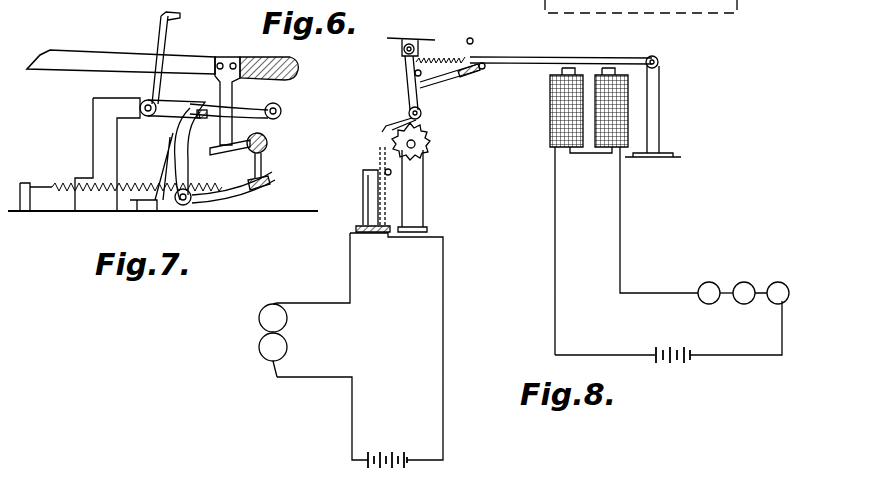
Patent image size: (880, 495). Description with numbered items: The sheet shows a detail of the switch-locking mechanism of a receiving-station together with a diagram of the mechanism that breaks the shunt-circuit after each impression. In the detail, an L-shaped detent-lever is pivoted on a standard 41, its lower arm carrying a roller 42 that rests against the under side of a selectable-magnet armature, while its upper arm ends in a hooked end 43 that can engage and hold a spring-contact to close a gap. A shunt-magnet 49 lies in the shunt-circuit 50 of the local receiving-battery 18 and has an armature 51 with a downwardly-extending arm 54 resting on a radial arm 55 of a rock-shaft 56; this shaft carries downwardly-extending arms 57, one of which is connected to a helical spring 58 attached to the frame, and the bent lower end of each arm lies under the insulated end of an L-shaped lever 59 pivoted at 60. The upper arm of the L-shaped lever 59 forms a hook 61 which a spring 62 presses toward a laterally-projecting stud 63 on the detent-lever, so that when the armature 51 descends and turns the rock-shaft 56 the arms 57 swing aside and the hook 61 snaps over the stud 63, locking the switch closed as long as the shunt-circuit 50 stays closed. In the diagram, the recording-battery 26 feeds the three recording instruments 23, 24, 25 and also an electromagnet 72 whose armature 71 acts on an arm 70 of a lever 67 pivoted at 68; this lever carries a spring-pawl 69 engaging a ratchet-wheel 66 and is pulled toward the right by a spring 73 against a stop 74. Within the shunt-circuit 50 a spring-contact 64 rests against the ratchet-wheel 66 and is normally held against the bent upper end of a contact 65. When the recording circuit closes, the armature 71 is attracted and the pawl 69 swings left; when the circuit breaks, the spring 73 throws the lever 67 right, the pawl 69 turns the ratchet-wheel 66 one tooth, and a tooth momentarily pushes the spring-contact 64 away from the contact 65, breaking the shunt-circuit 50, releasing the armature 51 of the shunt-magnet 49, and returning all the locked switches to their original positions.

In FIG. 8, the local receiving-battery 18 is at (387, 449).
In FIG. 8, the recording instrument 23 is at (637, 251).
In FIG. 8, the recording instrument 24 is at (737, 285).
In FIG. 8, the recording instrument 25 is at (739, 310).
In FIG. 8, the recording-battery 26 is at (622, 343).
In FIG. 7, the standard 41 is at (115, 154).
In FIG. 7, the roller 42 is at (282, 104).
In FIG. 7, the hooked end 43 is at (177, 55).
In FIG. 8, the shunt-magnet 49 is at (287, 340).
In FIG. 8, the shunt-circuit 50 is at (374, 346).
In FIG. 7, the armature 51 is at (121, 62).
In FIG. 7, the downwardly-extending arm 54 is at (256, 101).
In FIG. 7, the radial arm 55 is at (230, 155).
In FIG. 7, the rock-shaft 56 is at (271, 138).
In FIG. 7, the downwardly-extending arm 57 is at (268, 161).
In FIG. 7, the helical spring 58 is at (121, 183).
In FIG. 7, the L-shaped lever 59 is at (233, 190).
In FIG. 7, the pivot 60 is at (185, 206).
In FIG. 7, the hook 61 is at (177, 98).
In FIG. 7, the spring 62 is at (165, 159).
In FIG. 7, the stud 63 is at (229, 115).
In FIG. 8, the spring-contact 64 is at (378, 150).
In FIG. 8, the contact 65 is at (362, 188).
In FIG. 8, the ratchet-wheel 66 is at (428, 142).
In FIG. 8, the lever 67 is at (422, 110).
In FIG. 8, the pivot 68 is at (403, 50).
In FIG. 8, the spring-pawl 69 is at (386, 126).
In FIG. 8, the arm 70 is at (440, 90).
In FIG. 8, the armature 71 is at (561, 50).
In FIG. 8, the electromagnet 72 is at (615, 106).
In FIG. 8, the spring 73 is at (444, 39).
In FIG. 8, the stop 74 is at (422, 73).